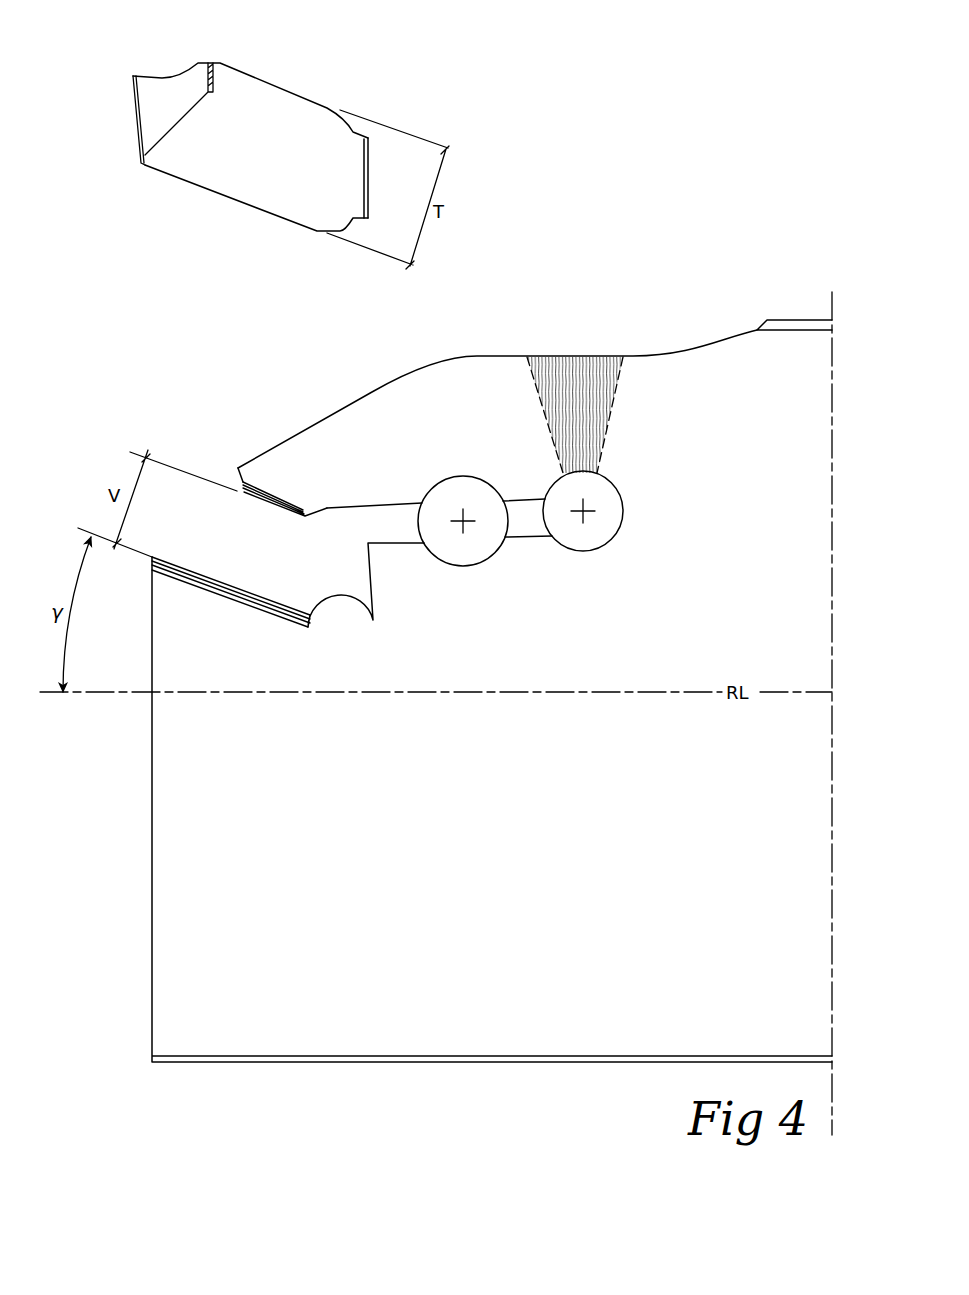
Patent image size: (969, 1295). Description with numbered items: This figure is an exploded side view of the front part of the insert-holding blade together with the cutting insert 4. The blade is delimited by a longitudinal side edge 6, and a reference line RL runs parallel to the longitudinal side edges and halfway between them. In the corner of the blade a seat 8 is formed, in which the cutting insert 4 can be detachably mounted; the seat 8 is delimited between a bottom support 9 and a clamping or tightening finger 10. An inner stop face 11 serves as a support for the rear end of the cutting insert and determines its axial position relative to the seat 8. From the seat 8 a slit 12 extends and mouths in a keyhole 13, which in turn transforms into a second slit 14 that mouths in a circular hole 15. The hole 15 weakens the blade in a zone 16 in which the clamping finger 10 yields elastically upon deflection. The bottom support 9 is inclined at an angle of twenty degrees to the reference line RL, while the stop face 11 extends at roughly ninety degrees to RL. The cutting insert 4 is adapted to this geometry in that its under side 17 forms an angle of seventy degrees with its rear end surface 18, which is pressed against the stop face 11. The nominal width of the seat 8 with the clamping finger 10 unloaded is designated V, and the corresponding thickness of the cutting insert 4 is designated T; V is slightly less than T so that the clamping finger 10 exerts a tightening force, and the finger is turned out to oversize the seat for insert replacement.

The cutting insert 4 is at (290, 82).
The longitudinal side edge 6 is at (797, 320).
The seat 8 is at (253, 527).
The bottom support 9 is at (215, 579).
The clamping finger 10 is at (372, 390).
The inner stop face 11 is at (366, 566).
The slit 12 is at (393, 527).
The keyhole 13 is at (483, 474).
The second slit 14 is at (525, 518).
The circular hole 15 is at (595, 525).
The zone 16 is at (580, 405).
The under side 17 is at (228, 200).
The rear end surface 18 is at (368, 160).